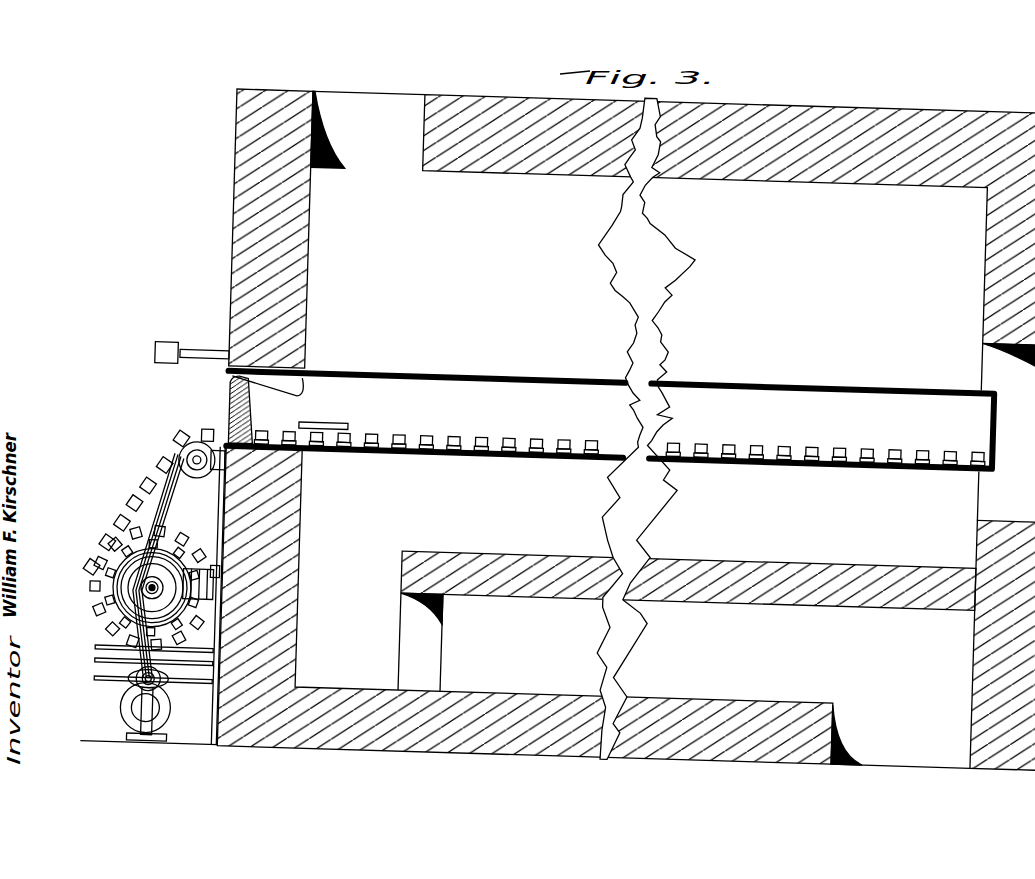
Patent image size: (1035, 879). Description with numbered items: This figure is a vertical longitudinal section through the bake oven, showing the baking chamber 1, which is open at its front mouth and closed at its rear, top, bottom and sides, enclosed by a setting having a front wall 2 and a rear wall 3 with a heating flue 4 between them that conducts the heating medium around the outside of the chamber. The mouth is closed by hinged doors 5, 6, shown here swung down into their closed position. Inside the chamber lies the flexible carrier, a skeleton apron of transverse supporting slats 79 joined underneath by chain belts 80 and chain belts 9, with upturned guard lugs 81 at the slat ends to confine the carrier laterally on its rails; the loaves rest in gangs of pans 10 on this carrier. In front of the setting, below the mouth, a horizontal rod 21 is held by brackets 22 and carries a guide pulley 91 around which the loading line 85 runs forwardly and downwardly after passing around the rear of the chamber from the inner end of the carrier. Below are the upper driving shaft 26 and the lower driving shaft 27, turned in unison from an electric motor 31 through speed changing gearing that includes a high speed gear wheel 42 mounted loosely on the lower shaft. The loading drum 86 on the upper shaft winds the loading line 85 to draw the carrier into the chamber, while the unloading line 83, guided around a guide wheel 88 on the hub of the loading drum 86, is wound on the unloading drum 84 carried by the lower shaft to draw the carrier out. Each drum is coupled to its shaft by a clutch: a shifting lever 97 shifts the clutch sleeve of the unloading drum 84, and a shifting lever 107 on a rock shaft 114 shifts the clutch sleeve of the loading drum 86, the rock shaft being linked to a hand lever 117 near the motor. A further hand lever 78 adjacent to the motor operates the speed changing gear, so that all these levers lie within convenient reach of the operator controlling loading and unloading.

The baking chamber 1 is at (749, 399).
The front wall 2 is at (237, 259).
The rear wall 3 is at (990, 262).
The heating flue 4 is at (490, 304).
The door 5 is at (307, 389).
The door 6 is at (259, 409).
The chain belts 9 is at (512, 436).
The pans 10 is at (348, 425).
The horizontal rod 21 is at (209, 480).
The brackets 22 is at (232, 468).
The upper driving shaft 26 is at (160, 592).
The lower driving shaft 27 is at (150, 691).
The electric motor 31 is at (146, 741).
The high speed gear wheel 42 is at (185, 704).
The hand lever 78 is at (112, 651).
The supporting slats 79 is at (816, 432).
The chain belts 80 is at (893, 432).
The guard lugs 81 is at (600, 434).
The unloading line 83 is at (112, 636).
The unloading drum 84 is at (152, 698).
The loading line 85 is at (178, 524).
The loading drum 86 is at (214, 566).
The guide wheel 88 is at (100, 571).
The guide pulley 91 is at (193, 455).
The shifting lever 97 is at (112, 682).
The shifting lever 107 is at (234, 572).
The rock shaft 114 is at (236, 627).
The hand lever 117 is at (112, 664).